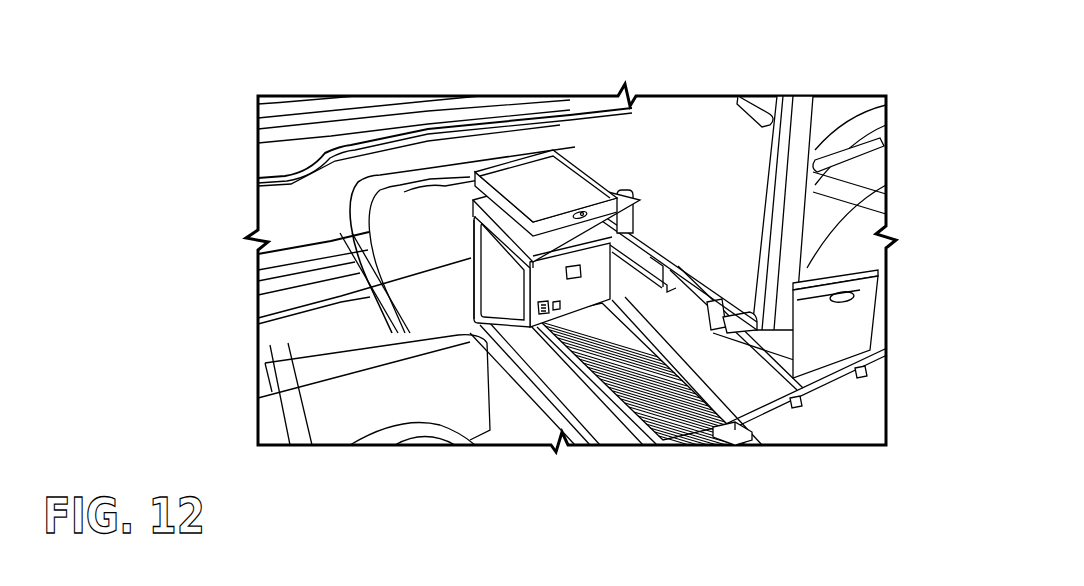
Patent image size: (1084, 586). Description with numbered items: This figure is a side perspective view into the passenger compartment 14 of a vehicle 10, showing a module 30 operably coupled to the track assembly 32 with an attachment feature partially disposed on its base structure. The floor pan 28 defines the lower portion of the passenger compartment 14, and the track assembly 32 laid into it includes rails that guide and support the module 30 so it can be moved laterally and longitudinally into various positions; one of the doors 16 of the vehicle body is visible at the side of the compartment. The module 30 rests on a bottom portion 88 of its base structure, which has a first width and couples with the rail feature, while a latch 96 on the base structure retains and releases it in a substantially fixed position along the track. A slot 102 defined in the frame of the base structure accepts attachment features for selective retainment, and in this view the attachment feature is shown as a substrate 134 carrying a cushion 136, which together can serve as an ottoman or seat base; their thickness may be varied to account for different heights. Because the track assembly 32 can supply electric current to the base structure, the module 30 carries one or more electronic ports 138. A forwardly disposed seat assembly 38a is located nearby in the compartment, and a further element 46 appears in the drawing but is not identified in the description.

The vehicle 10 is at (540, 84).
The passenger compartment 14 is at (287, 140).
The doors 16 is at (395, 170).
The floor pan 28 is at (793, 403).
The module 30 is at (404, 355).
The track assembly 32 is at (718, 432).
The forwardly disposed seat assembly 38a is at (812, 256).
The floor track grate 46 is at (603, 413).
The bottom portion 88 is at (532, 323).
The latch 96 is at (580, 220).
The slot 102 is at (636, 212).
The substrate 134 is at (470, 246).
The cushion 136 is at (515, 172).
The electronic ports 138 is at (554, 312).